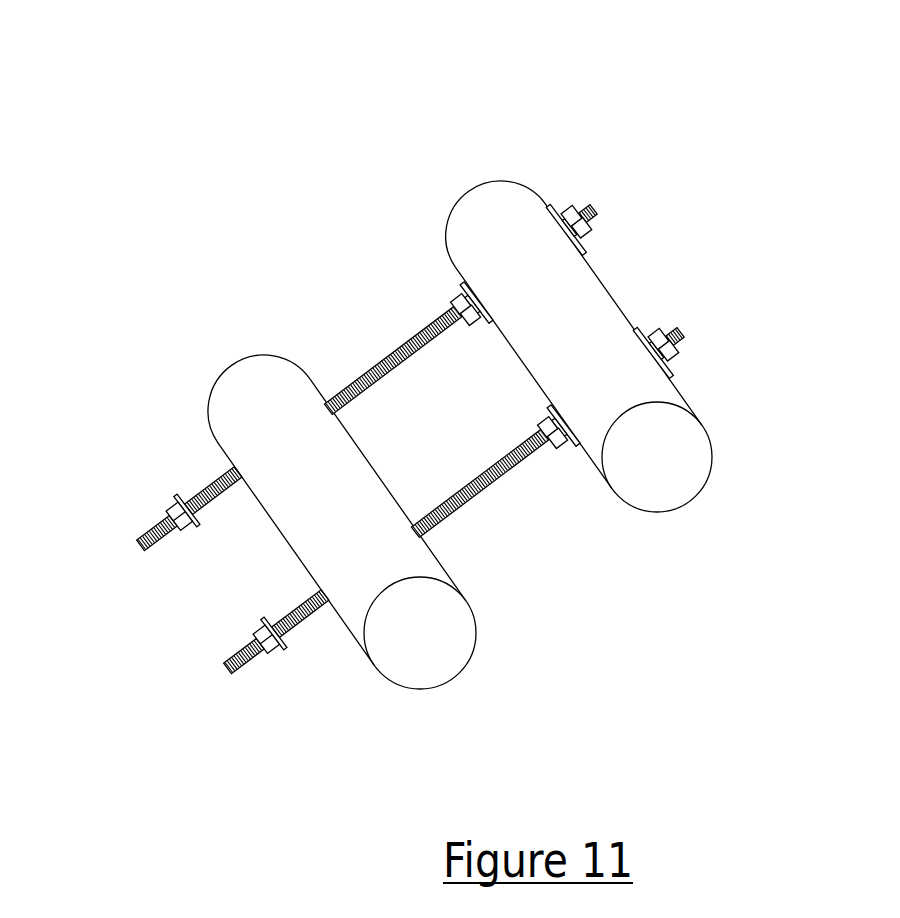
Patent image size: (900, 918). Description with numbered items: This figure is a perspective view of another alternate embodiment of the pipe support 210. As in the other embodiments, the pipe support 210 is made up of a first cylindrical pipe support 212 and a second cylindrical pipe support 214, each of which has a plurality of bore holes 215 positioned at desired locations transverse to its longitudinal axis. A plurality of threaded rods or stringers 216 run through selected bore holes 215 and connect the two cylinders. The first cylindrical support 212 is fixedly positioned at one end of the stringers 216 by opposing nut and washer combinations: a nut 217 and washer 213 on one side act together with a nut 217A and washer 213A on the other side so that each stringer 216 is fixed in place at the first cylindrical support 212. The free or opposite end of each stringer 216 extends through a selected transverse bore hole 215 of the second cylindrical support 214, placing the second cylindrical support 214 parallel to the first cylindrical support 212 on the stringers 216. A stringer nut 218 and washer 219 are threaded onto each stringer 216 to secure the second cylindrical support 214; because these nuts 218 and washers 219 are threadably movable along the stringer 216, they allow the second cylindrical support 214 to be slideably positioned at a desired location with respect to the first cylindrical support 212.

The pipe support 210 is at (448, 415).
The first cylindrical pipe support 212 is at (577, 305).
The second cylindrical pipe support 214 is at (307, 510).
The bore holes 215 is at (476, 293).
The threaded rods or stringers 216 is at (372, 364).
The washer 213 is at (455, 276).
The nut 217 is at (455, 296).
The washer 213A is at (555, 207).
The nut 217A is at (568, 207).
The stringer nut 218 is at (170, 506).
The washer 219 is at (180, 502).